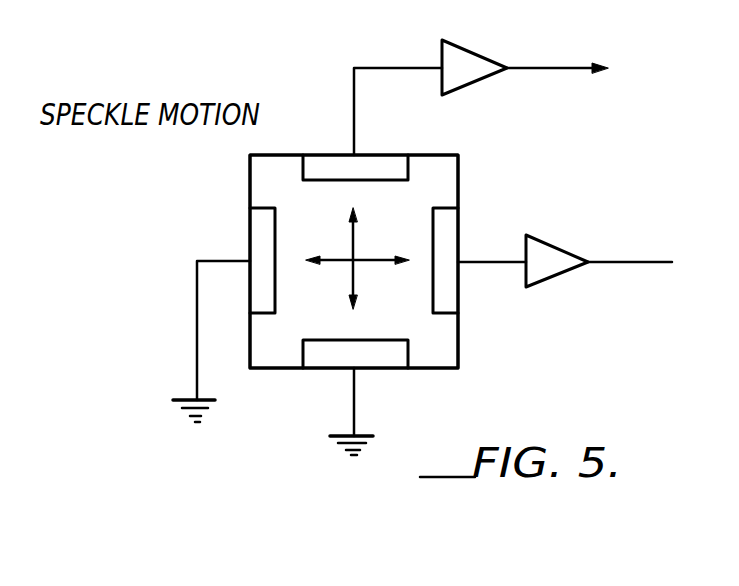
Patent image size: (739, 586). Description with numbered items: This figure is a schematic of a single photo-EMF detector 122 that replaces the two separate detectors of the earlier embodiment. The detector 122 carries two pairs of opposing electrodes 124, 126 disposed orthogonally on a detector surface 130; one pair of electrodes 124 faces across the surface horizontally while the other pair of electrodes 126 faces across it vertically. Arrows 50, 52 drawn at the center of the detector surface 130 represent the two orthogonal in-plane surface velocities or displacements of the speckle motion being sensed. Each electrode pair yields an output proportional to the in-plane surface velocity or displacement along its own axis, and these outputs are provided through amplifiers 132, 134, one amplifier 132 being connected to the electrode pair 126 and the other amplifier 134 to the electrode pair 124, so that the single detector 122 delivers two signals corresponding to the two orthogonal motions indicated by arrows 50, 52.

The arrow 50 is at (357, 238).
The arrow 52 is at (368, 262).
The photo-EMF detector 122 is at (499, 160).
The pair of opposing electrodes 124 is at (253, 225).
The pair of opposing electrodes 126 is at (380, 157).
The detector surface 130 is at (263, 369).
The amplifier 132 is at (487, 55).
The amplifier 134 is at (565, 248).